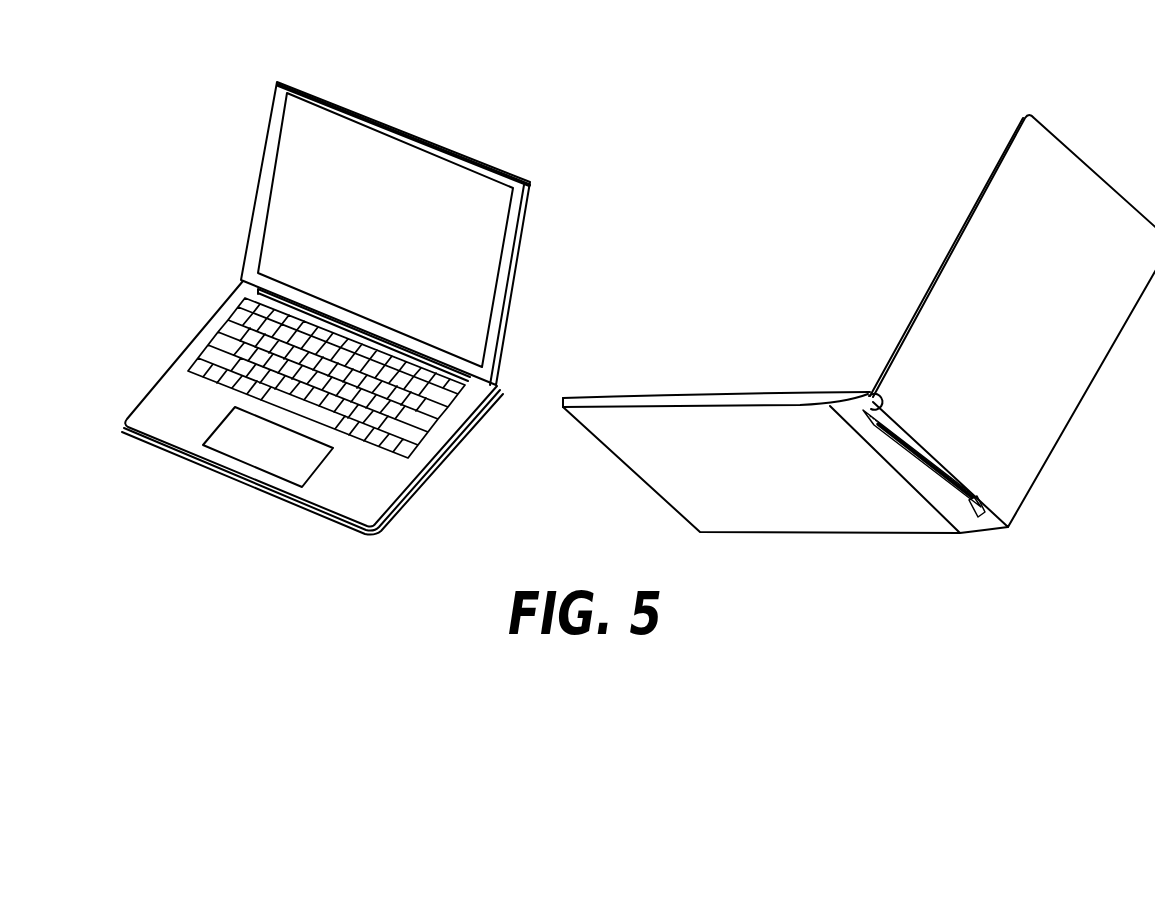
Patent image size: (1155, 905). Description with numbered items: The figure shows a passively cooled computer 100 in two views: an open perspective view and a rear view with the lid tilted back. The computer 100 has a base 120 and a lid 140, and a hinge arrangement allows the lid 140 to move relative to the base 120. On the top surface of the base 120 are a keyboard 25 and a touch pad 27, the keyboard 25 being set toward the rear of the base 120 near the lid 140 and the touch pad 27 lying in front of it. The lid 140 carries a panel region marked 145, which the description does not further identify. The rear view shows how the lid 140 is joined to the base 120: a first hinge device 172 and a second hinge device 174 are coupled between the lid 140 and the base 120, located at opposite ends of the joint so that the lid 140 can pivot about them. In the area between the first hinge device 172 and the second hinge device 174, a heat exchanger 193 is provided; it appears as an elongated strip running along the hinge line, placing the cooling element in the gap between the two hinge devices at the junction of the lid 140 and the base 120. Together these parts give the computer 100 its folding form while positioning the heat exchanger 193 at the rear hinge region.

The computer 100 is at (198, 158).
The base 120 is at (398, 477).
The lid 140 is at (521, 256).
The display 145 is at (450, 172).
The keyboard 25 is at (435, 430).
The touch pad 27 is at (247, 457).
The first hinge device 172 is at (868, 404).
The heat exchanger 193 is at (937, 477).
The second hinge device 174 is at (984, 512).